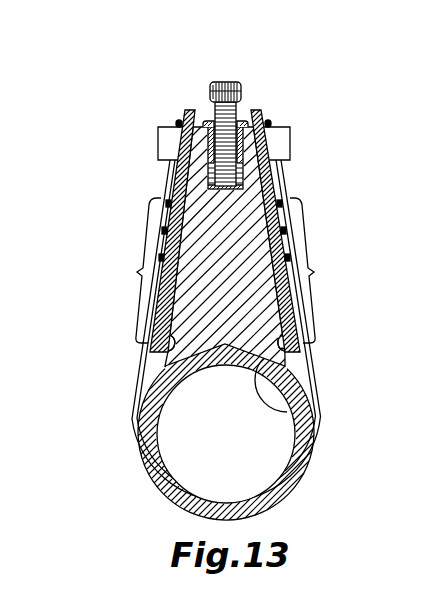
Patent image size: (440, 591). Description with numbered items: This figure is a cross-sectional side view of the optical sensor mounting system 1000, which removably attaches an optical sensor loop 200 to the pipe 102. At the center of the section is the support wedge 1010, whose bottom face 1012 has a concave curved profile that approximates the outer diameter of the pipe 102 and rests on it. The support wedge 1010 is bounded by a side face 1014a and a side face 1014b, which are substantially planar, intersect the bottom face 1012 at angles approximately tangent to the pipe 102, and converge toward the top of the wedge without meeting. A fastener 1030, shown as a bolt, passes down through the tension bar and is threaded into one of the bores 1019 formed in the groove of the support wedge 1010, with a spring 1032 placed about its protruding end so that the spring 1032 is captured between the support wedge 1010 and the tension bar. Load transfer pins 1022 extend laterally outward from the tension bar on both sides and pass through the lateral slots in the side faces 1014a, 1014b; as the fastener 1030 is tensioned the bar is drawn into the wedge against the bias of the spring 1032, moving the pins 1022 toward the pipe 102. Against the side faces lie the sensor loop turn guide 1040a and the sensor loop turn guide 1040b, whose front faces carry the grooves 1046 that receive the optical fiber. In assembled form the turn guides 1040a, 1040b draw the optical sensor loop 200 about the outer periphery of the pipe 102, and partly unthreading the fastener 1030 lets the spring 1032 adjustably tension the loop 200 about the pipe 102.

The optical sensor mounting system 1000 is at (104, 212).
The support wedge 1010 is at (205, 303).
The bottom face 1012 is at (290, 412).
The side face 1014a is at (285, 363).
The side face 1014b is at (165, 363).
The bores 1019 is at (212, 178).
The load transfer pins 1022 is at (158, 143).
The fasteners 1030 is at (227, 82).
The springs 1032 is at (250, 171).
The sensor loop turn guide 1040a is at (256, 110).
The sensor loop turn guide 1040b is at (190, 110).
The grooves 1046 is at (224, 231).
The pipe 102 is at (288, 490).
The optical sensor loop 200 is at (157, 500).